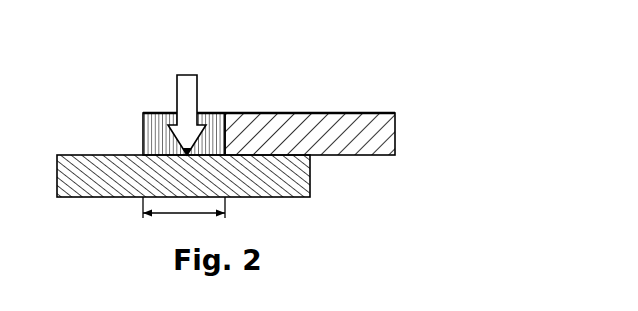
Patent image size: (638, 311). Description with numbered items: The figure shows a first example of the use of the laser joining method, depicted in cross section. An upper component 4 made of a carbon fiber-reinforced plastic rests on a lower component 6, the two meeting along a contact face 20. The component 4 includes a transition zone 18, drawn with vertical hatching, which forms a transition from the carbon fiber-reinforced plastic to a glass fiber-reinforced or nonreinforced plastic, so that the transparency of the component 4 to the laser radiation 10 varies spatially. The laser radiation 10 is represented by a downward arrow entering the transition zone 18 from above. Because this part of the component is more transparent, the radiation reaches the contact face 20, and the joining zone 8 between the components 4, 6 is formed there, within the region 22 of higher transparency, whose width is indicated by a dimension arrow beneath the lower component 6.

The component 4 is at (373, 113).
The component 6 is at (310, 190).
The joining zone 8 is at (185, 156).
The laser radiation 10 is at (194, 89).
The transition zone 18 is at (222, 97).
The contact face 20 is at (284, 148).
The region of higher transparency 22 is at (205, 214).